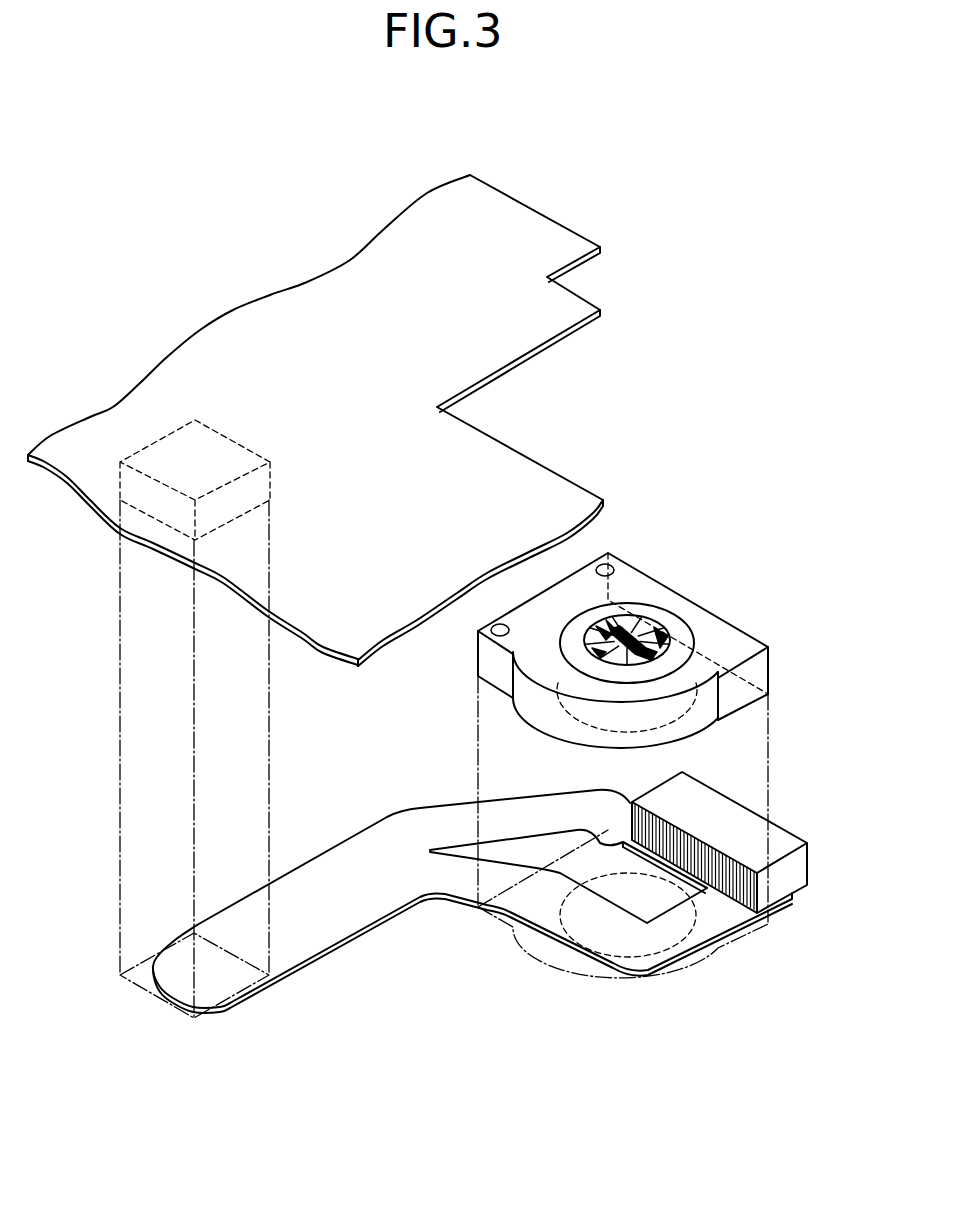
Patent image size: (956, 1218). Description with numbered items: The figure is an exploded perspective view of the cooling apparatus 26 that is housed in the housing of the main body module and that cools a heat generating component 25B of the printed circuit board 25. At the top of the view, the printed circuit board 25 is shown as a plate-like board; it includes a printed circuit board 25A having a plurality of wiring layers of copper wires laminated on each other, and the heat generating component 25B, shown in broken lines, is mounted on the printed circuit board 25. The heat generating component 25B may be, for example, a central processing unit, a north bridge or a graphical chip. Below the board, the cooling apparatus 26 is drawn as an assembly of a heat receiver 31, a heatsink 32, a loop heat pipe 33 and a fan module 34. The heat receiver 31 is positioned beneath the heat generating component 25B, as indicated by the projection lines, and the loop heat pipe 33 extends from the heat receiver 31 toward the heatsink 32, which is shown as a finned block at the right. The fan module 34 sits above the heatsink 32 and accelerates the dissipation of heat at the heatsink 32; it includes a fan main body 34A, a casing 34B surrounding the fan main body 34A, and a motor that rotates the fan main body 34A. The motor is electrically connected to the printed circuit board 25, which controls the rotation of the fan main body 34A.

The printed circuit board 25 is at (508, 192).
The printed circuit board 25A is at (438, 207).
The heat generating component 25B is at (153, 438).
The cooling apparatus 26 is at (262, 206).
The heat receiver 31 is at (230, 980).
The heatsink 32 is at (783, 828).
The loop heat pipe 33 is at (352, 837).
The fan module 34 is at (697, 600).
The fan main body 34A is at (620, 617).
The casing 34B is at (730, 647).